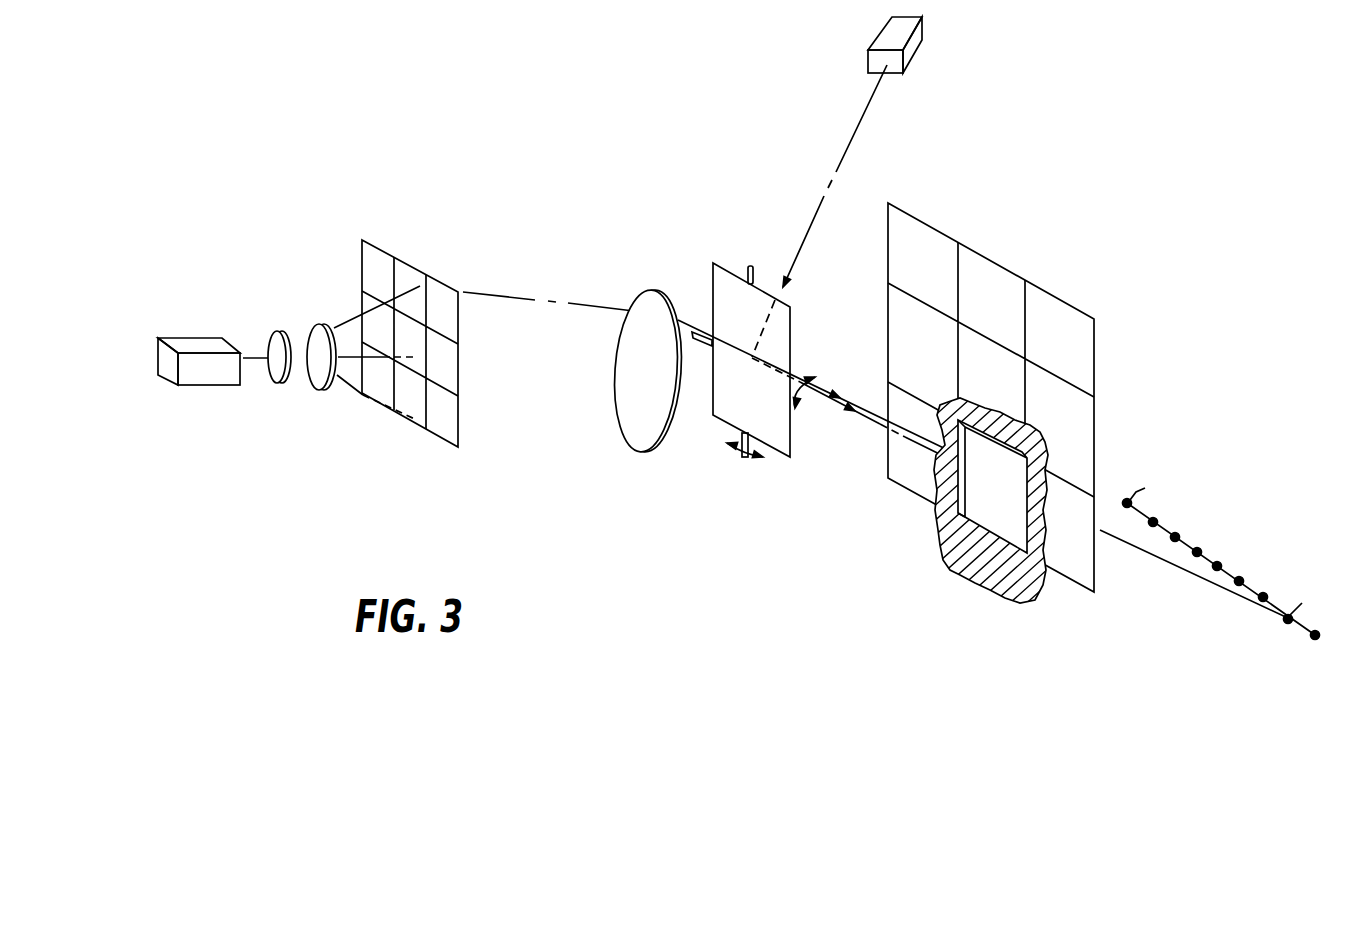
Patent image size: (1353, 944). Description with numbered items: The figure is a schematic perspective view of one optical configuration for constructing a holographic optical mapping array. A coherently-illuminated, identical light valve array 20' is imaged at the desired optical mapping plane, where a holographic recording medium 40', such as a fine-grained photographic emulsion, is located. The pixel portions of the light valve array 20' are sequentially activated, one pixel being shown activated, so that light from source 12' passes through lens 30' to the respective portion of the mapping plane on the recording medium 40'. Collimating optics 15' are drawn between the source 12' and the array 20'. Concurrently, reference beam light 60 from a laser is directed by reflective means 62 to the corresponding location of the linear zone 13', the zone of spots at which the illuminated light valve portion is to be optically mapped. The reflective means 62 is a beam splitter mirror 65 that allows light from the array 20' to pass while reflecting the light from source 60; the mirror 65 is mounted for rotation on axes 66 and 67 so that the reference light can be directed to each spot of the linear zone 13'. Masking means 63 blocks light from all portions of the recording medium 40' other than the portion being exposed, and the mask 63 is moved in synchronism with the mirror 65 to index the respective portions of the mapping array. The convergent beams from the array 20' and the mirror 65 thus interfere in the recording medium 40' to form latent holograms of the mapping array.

The source 12' is at (199, 343).
The collimating lens system 15' is at (302, 344).
The light valve array 20' is at (415, 342).
The lens 30' is at (647, 355).
The reference beam light 60 is at (922, 42).
The reflective means 62 is at (729, 461).
The masking means 63 is at (948, 567).
The beam splitter mirror 65 is at (780, 433).
The axis 66 is at (803, 397).
The axis 67 is at (750, 262).
The holographic recording medium 40' is at (991, 397).
The linear zone 13' is at (1210, 595).